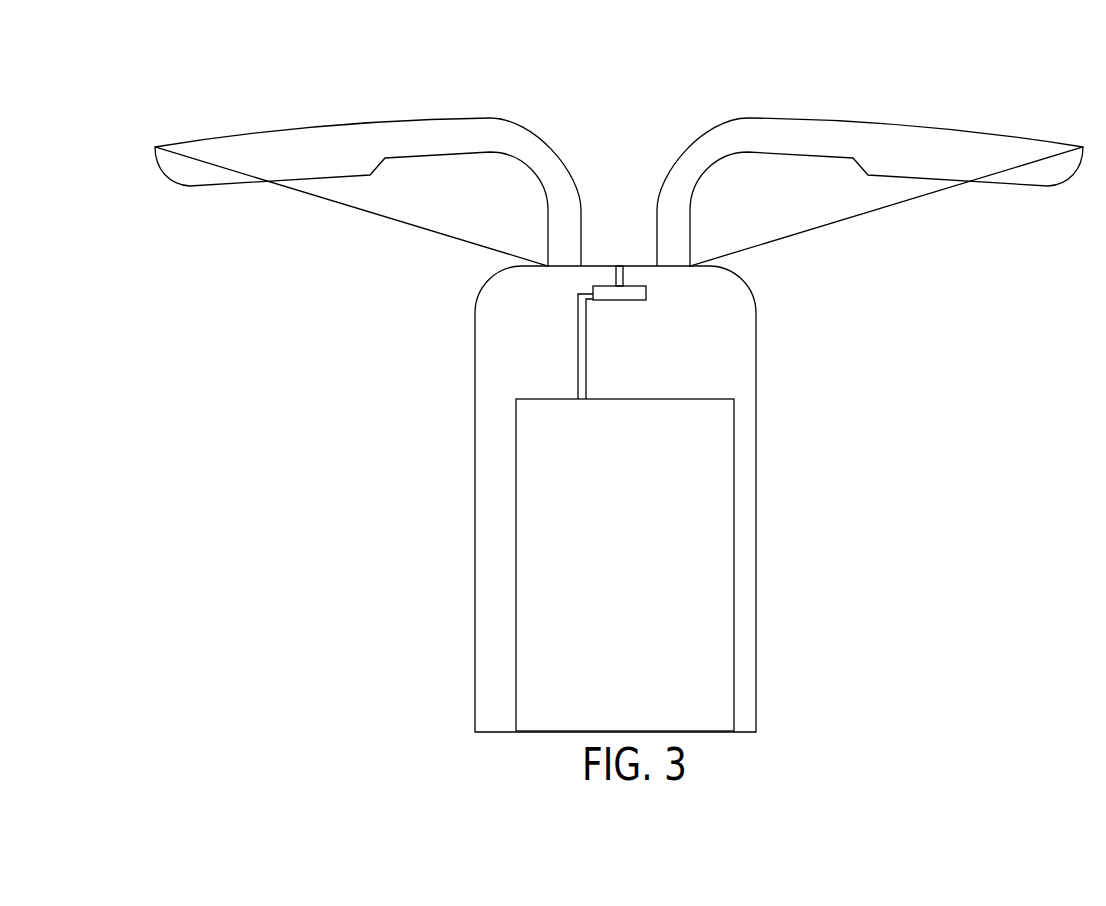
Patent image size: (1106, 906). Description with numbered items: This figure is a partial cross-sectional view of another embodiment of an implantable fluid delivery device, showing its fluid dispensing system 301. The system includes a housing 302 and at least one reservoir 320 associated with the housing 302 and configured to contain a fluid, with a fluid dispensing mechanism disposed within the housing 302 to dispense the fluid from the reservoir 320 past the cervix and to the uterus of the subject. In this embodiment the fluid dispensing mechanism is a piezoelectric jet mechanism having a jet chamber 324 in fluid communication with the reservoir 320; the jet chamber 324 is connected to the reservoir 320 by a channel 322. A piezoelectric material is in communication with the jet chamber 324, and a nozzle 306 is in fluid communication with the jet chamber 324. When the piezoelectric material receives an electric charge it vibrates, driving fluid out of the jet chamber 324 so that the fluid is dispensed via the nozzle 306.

The fluid dispensing system 301 is at (1020, 110).
The housing 302 is at (743, 455).
The nozzle 306 is at (620, 272).
The reservoir 320 is at (535, 587).
The channel 322 is at (578, 396).
The jet chamber 324 is at (625, 297).